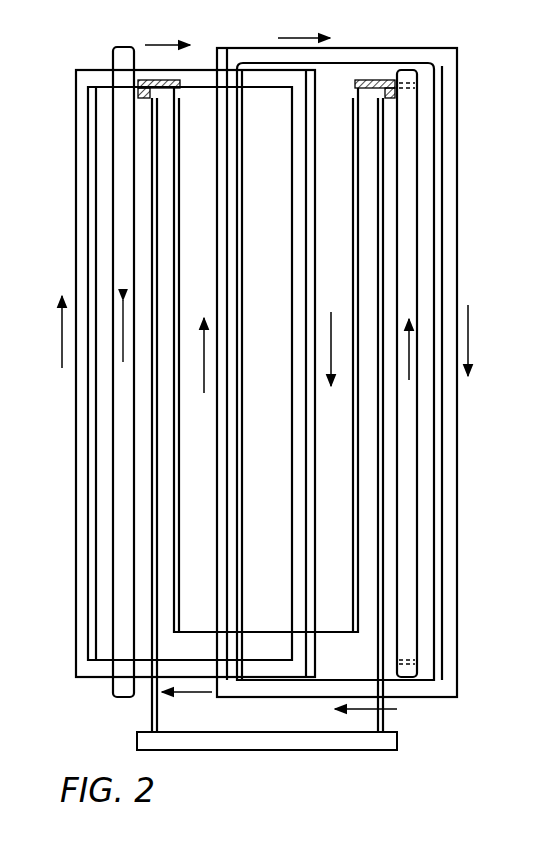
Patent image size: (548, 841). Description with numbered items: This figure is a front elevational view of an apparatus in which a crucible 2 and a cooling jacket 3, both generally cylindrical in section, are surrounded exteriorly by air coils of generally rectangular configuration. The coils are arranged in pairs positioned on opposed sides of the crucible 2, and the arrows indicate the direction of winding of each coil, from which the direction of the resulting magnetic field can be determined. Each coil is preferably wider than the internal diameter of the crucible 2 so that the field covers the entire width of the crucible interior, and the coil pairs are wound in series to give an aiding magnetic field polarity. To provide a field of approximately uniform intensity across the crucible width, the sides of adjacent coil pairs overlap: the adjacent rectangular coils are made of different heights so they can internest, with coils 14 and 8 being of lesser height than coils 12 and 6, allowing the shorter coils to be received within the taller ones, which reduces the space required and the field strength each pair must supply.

The crucible 2 is at (362, 479).
The cooling jacket 3 is at (388, 528).
The coil 6 is at (232, 265).
The coil 8 is at (80, 182).
The coil 12 is at (123, 208).
The coil 14 is at (408, 238).